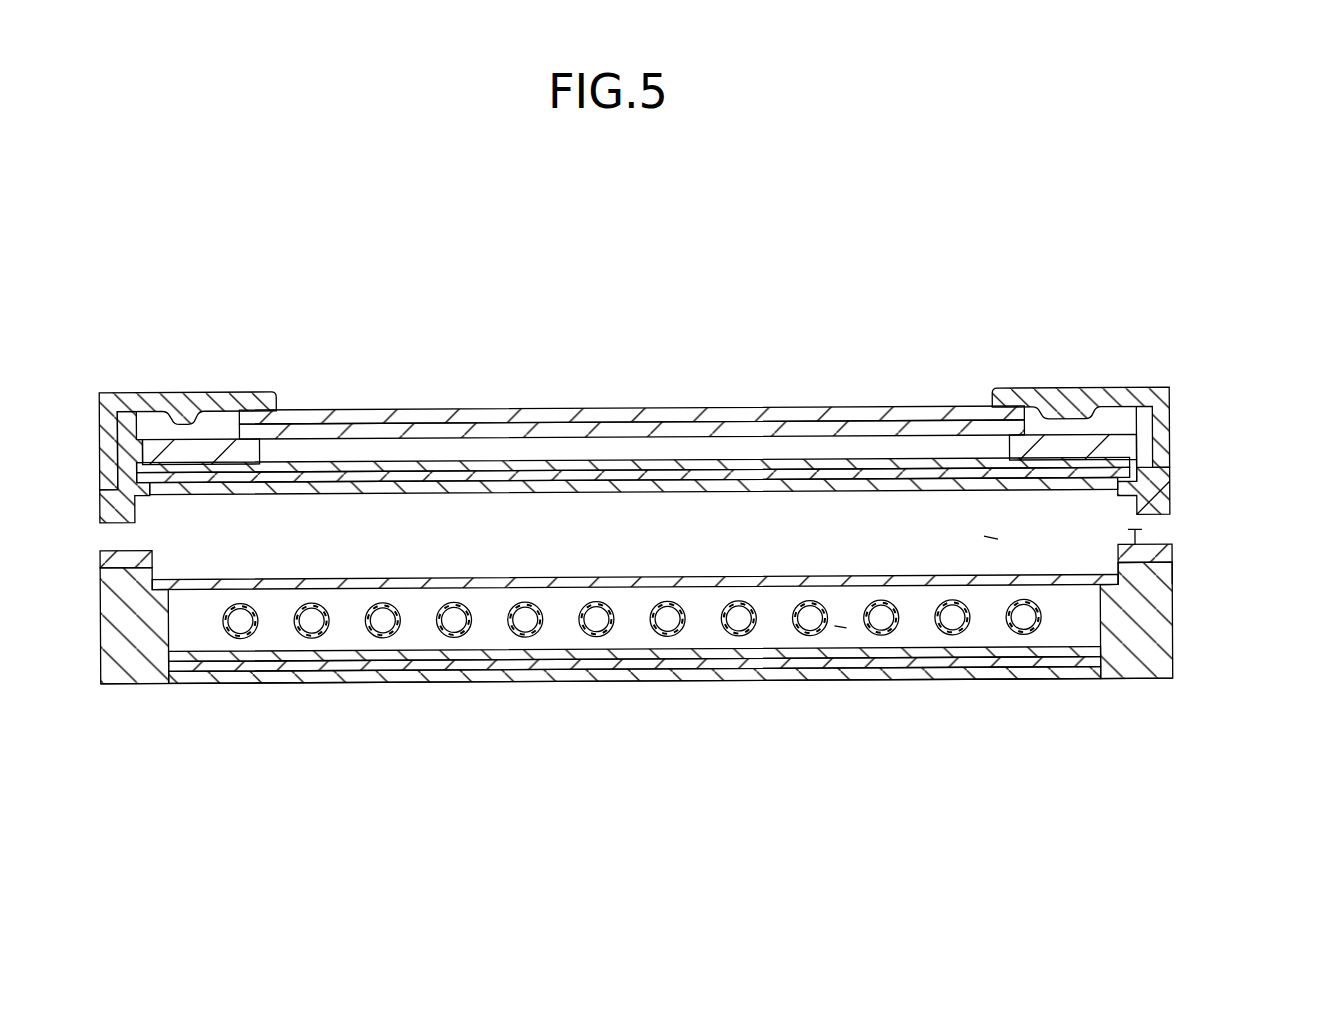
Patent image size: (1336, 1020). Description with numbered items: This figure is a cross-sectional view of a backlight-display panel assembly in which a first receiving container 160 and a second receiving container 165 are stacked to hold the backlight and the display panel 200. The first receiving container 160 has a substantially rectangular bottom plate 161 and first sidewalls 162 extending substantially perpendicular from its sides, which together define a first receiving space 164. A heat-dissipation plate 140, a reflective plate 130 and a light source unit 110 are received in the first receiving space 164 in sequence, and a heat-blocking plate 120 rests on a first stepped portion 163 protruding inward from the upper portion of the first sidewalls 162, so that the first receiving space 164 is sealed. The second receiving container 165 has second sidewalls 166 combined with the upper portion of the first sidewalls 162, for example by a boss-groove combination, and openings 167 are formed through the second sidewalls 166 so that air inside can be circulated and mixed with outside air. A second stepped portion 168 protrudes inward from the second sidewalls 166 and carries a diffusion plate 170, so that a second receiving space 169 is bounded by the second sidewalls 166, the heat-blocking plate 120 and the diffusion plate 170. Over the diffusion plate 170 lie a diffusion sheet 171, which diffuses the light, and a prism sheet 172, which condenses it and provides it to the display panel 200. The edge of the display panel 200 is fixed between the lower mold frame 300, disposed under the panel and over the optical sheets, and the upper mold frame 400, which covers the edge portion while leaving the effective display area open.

The light source unit 110 is at (221, 617).
The heat-blocking plate 120 is at (152, 578).
The reflective plate 130 is at (175, 657).
The heat-dissipation plate 140 is at (125, 683).
The first receiving container 160 is at (707, 626).
The bottom plate 161 is at (1157, 652).
The first sidewalls 162 is at (1093, 681).
The first stepped portion 163 is at (1113, 598).
The first receiving space 164 is at (840, 628).
The second receiving container 165 is at (1216, 497).
The second sidewalls 166 is at (1160, 545).
The openings 167 is at (1189, 573).
The second stepped portion 168 is at (1130, 472).
The second receiving space 169 is at (990, 542).
The diffusion plate 170 is at (165, 490).
The diffusion sheet 171 is at (140, 473).
The prism sheet 172 is at (138, 458).
The display panel 200 is at (518, 413).
The lower mold frame 300 is at (127, 438).
The upper mold frame 400 is at (112, 403).